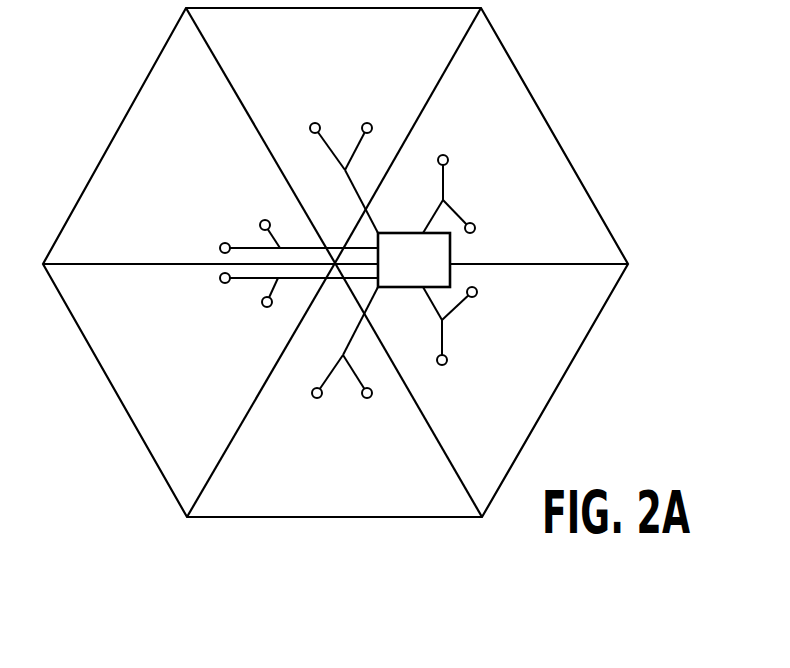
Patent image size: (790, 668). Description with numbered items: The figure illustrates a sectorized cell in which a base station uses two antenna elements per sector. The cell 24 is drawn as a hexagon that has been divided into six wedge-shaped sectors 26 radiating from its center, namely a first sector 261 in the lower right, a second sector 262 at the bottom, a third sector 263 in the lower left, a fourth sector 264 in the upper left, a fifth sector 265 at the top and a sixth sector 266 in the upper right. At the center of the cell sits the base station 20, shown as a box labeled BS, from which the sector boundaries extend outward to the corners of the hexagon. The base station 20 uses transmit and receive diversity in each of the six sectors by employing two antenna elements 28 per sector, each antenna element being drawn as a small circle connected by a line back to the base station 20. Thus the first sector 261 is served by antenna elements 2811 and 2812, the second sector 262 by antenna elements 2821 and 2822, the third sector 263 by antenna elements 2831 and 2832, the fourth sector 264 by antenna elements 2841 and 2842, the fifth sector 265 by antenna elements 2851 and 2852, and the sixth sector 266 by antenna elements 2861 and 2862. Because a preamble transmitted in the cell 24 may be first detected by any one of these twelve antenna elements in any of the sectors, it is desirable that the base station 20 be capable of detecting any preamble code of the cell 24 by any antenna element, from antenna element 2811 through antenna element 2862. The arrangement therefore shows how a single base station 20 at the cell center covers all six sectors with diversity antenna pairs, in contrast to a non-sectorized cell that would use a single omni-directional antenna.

The base station 20 is at (452, 268).
The cell 24 is at (517, 70).
The sectors 26 is at (335, 262).
The first sector 261 is at (527, 369).
The second sector 262 is at (352, 500).
The third sector 263 is at (167, 390).
The fourth sector 264 is at (156, 183).
The fifth sector 265 is at (346, 54).
The sixth sector 266 is at (539, 175).
The antenna elements 28 is at (356, 268).
The first antenna element of first sector 2811 is at (477, 292).
The second antenna element of first sector 2812 is at (437, 360).
The first antenna element of second sector 2821 is at (362, 396).
The second antenna element of second sector 2822 is at (312, 393).
The first antenna element of third sector 2831 is at (268, 307).
The second antenna element of third sector 2832 is at (220, 278).
The first antenna element of fourth sector 2841 is at (220, 248).
The second antenna element of fourth sector 2842 is at (260, 224).
The first antenna element of fifth sector 2851 is at (310, 128).
The second antenna element of fifth sector 2852 is at (362, 128).
The first antenna element of sixth sector 2861 is at (438, 160).
The second antenna element of sixth sector 2862 is at (480, 212).